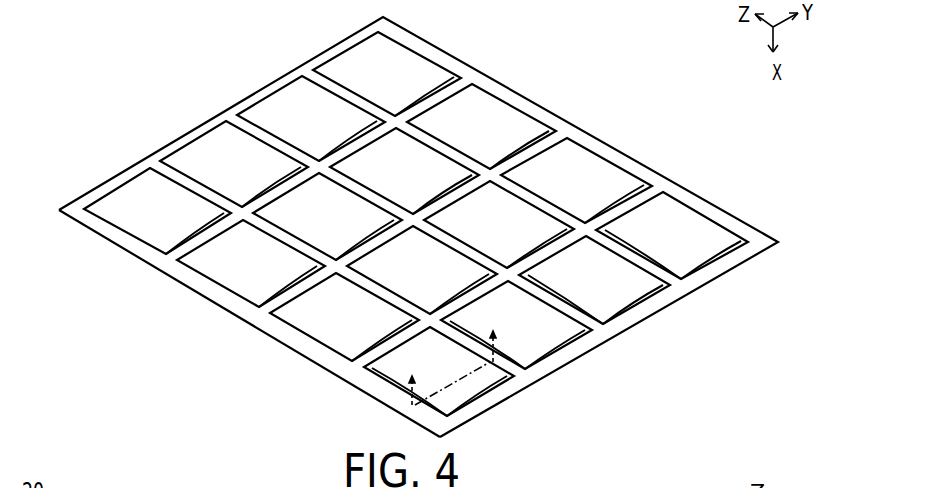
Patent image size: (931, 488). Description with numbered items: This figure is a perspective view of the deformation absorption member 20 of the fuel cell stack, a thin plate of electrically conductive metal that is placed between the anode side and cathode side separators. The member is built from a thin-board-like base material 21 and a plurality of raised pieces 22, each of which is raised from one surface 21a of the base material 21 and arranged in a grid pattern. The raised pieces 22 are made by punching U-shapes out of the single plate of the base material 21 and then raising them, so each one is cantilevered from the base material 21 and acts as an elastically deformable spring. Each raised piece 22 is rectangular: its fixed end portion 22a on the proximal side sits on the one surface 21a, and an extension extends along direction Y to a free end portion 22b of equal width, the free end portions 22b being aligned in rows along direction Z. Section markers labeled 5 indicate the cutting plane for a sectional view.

The deformation absorption member 20 is at (60, 24).
The base material 21 is at (263, 329).
The one surface of the base material 21a is at (325, 352).
The raised piece 22 is at (662, 298).
The fixed end portion 22a is at (595, 322).
The free end portion 22b is at (650, 271).
The section line V-V 5 is at (453, 355).